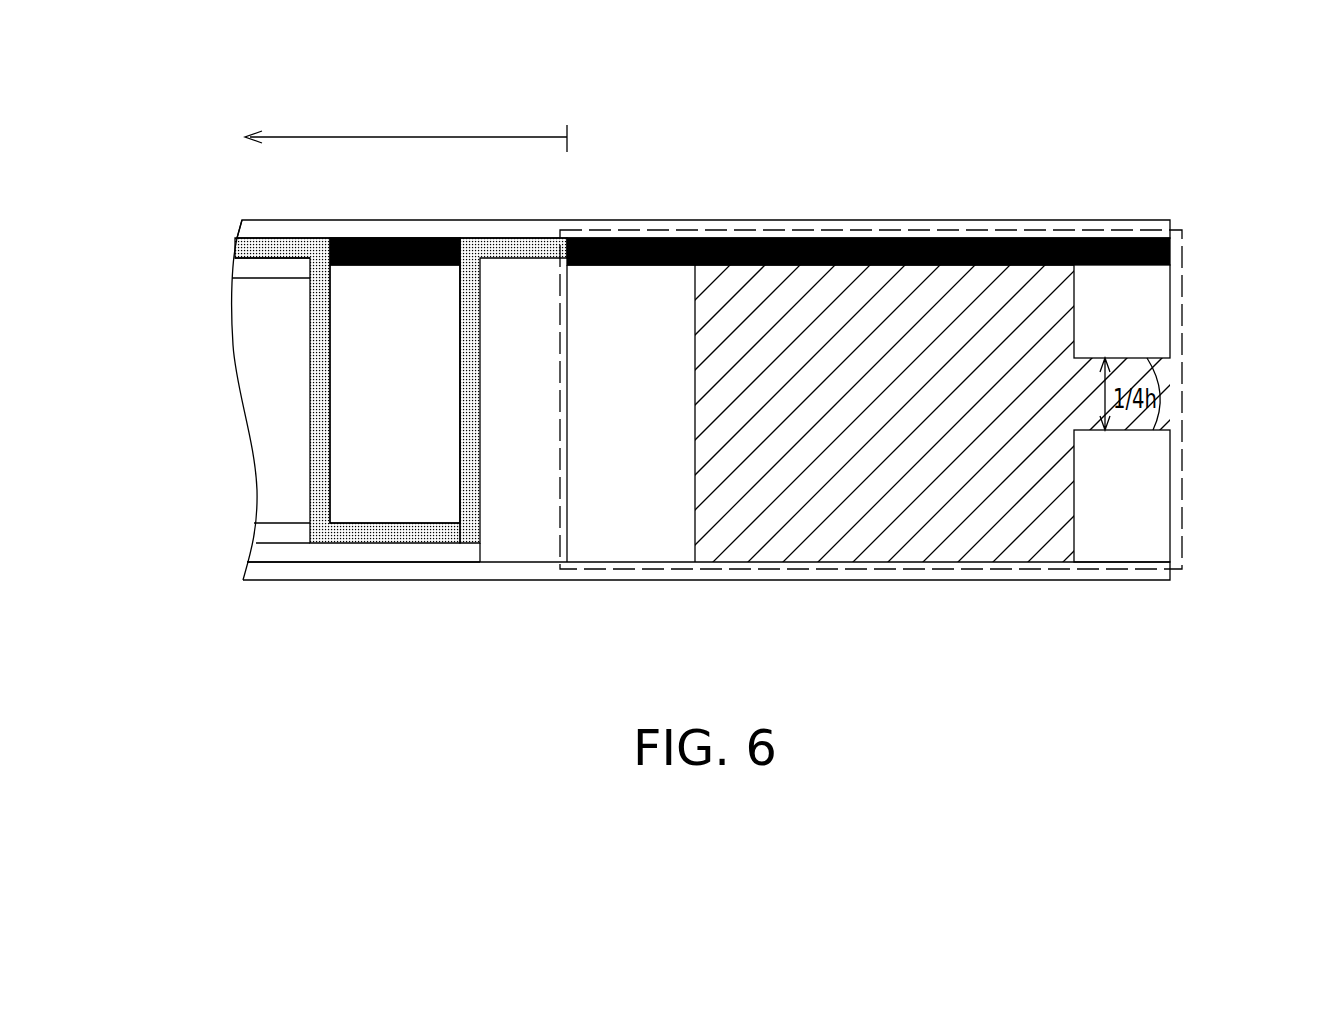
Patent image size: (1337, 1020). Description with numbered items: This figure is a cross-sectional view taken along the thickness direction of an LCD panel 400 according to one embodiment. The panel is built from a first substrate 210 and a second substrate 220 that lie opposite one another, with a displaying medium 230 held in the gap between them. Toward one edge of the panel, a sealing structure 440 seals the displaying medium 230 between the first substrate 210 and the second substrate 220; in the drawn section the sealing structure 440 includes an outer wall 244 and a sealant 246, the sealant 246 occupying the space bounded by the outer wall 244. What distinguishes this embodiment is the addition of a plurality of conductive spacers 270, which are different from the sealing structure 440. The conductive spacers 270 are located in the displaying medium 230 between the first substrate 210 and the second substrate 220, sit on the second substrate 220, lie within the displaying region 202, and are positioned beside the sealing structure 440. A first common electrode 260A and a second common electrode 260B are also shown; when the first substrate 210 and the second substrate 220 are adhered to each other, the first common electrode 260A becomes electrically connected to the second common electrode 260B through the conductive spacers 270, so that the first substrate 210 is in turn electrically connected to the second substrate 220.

The displaying region 202 is at (406, 125).
The first substrate 210 is at (1095, 575).
The second substrate 220 is at (252, 228).
The displaying medium 230 is at (280, 290).
The outer wall 244 is at (1107, 302).
The sealant 246 is at (882, 303).
The first common electrode 260A is at (257, 552).
The second common electrode 260B is at (502, 247).
The conductive spacers 270 is at (402, 280).
The LCD panel 400 is at (1182, 666).
The sealing structure 440 is at (1182, 278).